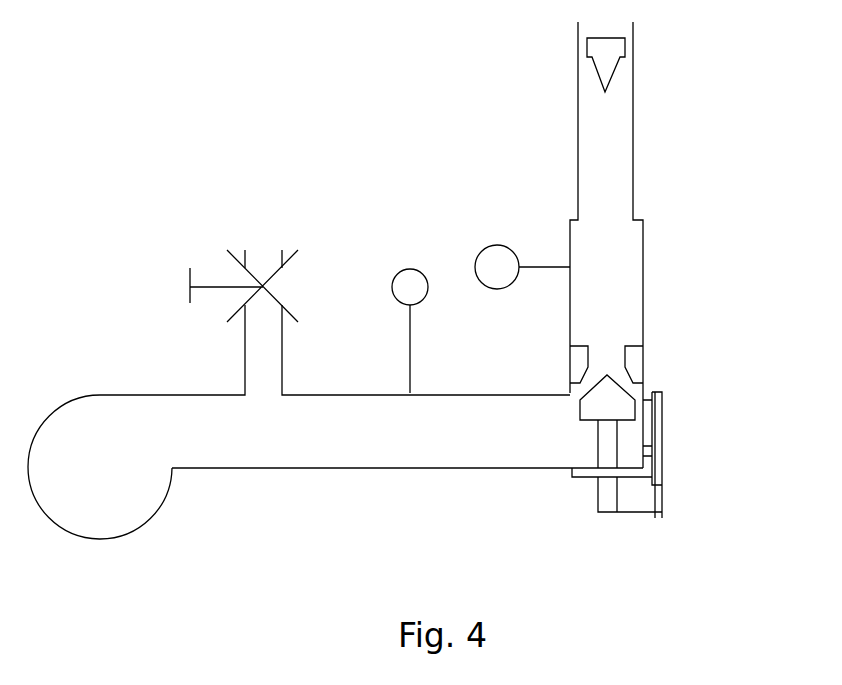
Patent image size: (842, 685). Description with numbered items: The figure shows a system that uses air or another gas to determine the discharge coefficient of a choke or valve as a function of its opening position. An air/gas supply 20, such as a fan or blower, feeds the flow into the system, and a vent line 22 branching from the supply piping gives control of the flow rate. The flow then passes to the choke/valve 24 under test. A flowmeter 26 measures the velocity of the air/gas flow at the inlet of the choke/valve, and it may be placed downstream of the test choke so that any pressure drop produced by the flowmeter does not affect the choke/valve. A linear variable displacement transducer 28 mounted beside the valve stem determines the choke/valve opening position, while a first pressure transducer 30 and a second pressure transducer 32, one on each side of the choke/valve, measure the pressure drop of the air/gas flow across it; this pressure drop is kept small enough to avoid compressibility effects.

The air/gas supply 20 is at (90, 477).
The vent line 22 is at (258, 282).
The choke/valve 24 is at (608, 398).
The flowmeter 26 is at (608, 70).
The linear variable displacement transducer 28 is at (663, 433).
The first pressure transducer 30 is at (392, 290).
The second pressure transducer 32 is at (505, 245).